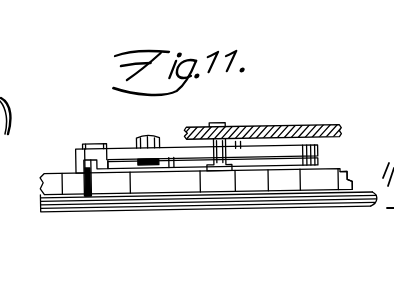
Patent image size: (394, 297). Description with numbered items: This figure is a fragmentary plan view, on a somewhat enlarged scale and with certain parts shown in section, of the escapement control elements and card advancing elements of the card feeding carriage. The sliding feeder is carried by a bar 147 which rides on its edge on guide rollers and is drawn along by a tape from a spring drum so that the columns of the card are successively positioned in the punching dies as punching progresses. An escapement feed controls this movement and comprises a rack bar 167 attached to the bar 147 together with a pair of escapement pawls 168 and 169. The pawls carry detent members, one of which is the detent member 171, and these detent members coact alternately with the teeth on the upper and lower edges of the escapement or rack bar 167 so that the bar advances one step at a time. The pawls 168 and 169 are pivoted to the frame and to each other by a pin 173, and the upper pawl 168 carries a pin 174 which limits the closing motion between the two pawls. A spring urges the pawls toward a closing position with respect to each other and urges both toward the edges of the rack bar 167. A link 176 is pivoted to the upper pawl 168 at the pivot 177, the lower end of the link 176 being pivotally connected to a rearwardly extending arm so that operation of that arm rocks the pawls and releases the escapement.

The bar 147 is at (260, 197).
The rack bar 167 is at (337, 167).
The escapement pawl 168 is at (120, 150).
The escapement pawl 169 is at (118, 163).
The detent member 171 is at (88, 194).
The pin 173 is at (224, 126).
The pin 174 is at (178, 162).
The link 176 is at (214, 141).
The pivot 177 is at (148, 134).